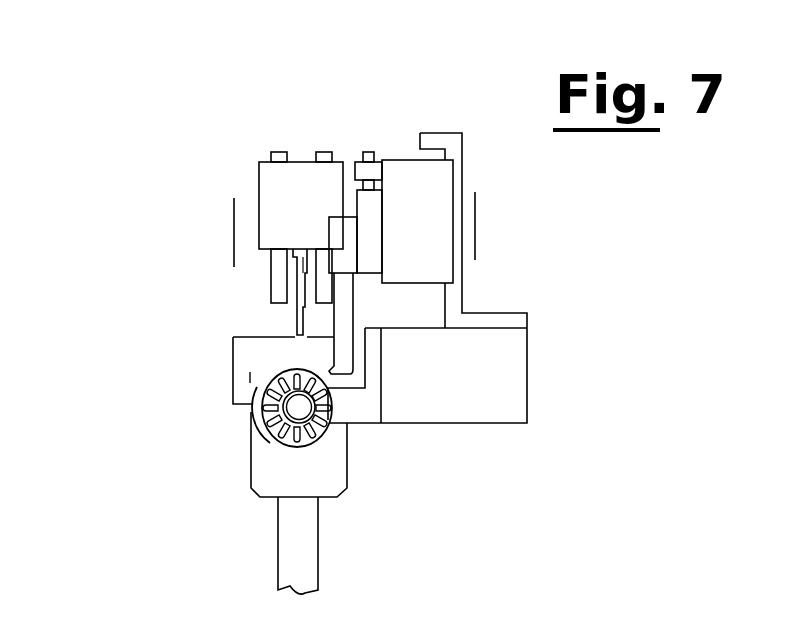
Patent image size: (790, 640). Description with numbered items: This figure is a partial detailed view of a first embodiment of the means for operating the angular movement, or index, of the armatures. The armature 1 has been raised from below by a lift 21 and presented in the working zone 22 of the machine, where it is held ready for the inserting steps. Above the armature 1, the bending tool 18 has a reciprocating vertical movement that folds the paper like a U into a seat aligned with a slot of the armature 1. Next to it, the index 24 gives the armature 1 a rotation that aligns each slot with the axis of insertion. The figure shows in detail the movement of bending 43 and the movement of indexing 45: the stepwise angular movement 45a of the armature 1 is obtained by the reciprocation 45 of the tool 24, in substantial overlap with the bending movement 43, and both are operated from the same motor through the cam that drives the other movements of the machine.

The armature 1 is at (277, 378).
The bending tool 18 is at (302, 267).
The lift 21 is at (260, 458).
The working zone 22 is at (197, 293).
The index 24 is at (337, 320).
The bending movement 43 is at (234, 232).
The indexing movement 45 is at (475, 217).
The stepwise angular movement 45a is at (252, 410).